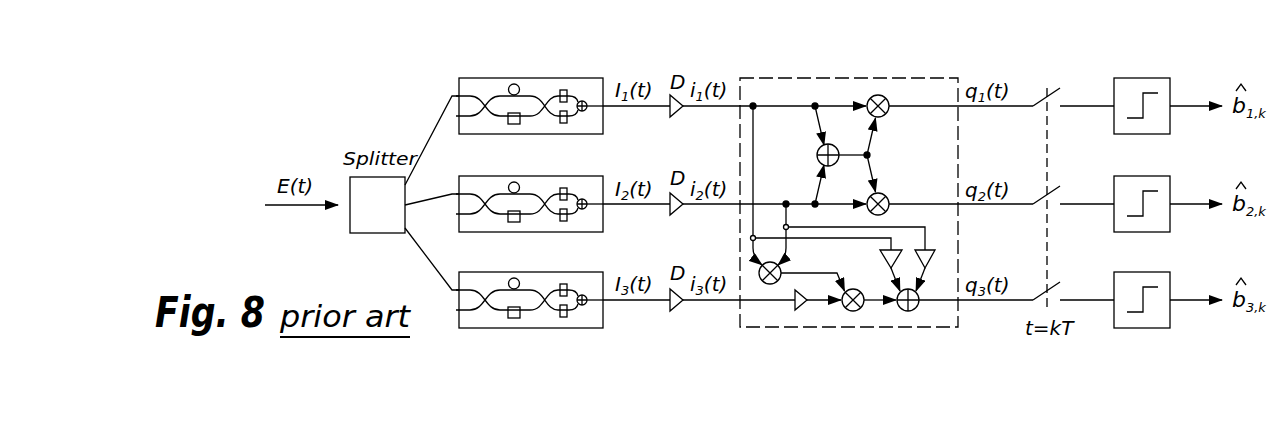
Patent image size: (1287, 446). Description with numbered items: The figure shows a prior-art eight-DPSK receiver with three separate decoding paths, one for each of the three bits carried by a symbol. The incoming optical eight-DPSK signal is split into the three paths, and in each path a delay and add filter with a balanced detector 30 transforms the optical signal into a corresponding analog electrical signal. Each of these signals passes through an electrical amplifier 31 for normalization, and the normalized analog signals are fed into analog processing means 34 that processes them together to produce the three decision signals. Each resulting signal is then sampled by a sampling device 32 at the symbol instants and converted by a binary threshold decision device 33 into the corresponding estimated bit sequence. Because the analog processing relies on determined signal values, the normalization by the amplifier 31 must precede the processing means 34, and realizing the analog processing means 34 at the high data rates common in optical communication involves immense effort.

The delay and add filter with a balanced detector 30 is at (490, 320).
The electrical amplifier 31 is at (673, 313).
The sampling device 32 is at (1055, 90).
The binary threshold decision device 33 is at (1127, 78).
The processing means 34 is at (920, 329).